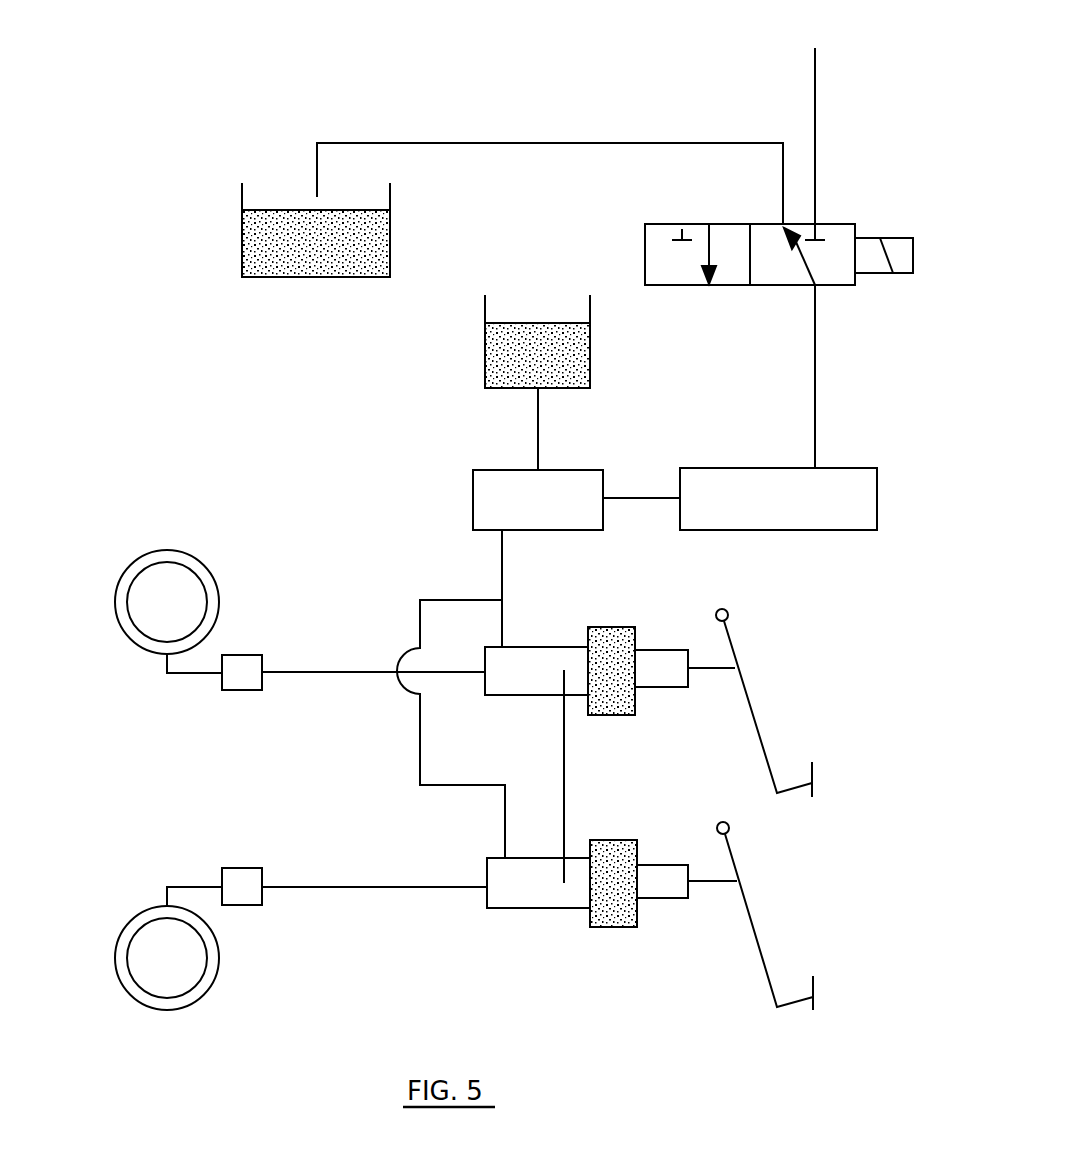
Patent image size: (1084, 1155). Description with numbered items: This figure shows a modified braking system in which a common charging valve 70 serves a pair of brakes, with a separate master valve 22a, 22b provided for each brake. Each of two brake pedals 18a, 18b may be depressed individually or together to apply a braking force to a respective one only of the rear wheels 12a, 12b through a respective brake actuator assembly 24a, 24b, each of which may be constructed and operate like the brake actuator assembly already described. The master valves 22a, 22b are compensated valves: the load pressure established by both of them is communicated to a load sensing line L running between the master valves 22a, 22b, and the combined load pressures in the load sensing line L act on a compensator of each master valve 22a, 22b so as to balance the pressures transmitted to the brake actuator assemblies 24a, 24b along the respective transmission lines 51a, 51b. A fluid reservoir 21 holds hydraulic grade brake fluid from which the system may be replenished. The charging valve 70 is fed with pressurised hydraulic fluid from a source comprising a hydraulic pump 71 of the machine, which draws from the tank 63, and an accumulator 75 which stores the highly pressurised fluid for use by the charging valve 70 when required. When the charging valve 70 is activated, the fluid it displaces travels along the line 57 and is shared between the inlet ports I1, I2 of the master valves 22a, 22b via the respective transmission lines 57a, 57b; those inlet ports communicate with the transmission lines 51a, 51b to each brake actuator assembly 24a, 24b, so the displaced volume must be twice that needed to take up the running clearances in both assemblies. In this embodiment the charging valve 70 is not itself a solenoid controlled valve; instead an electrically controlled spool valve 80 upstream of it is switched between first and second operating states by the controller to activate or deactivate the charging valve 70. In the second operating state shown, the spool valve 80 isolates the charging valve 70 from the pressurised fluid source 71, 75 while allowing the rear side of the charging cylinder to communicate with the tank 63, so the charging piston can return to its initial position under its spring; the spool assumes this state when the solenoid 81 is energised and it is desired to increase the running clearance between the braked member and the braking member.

The tank 63 is at (242, 210).
The fluid reservoir 21 is at (485, 345).
The hydraulic pump 71 is at (735, 123).
The accumulator 75 is at (815, 84).
The electrically controlled spool valve 80 is at (673, 286).
The solenoid 81 is at (902, 274).
The charging valve 70 is at (847, 530).
The rear wheel 12a is at (167, 551).
The rear wheel 12b is at (133, 926).
The brake actuator assembly 24a is at (242, 655).
The brake actuator assembly 24b is at (248, 868).
The transmission line 51a is at (347, 673).
The transmission line 51b is at (358, 888).
The supply line 57 is at (502, 565).
The transmission line 57a is at (505, 616).
The transmission line 57b is at (420, 626).
The inlet port I1 is at (505, 646).
The inlet port I2 is at (505, 858).
The master valve 22a is at (506, 680).
The master valve 22b is at (520, 898).
The load sensing line L is at (564, 770).
The brake pedal 18a is at (752, 708).
The brake pedal 18b is at (764, 955).